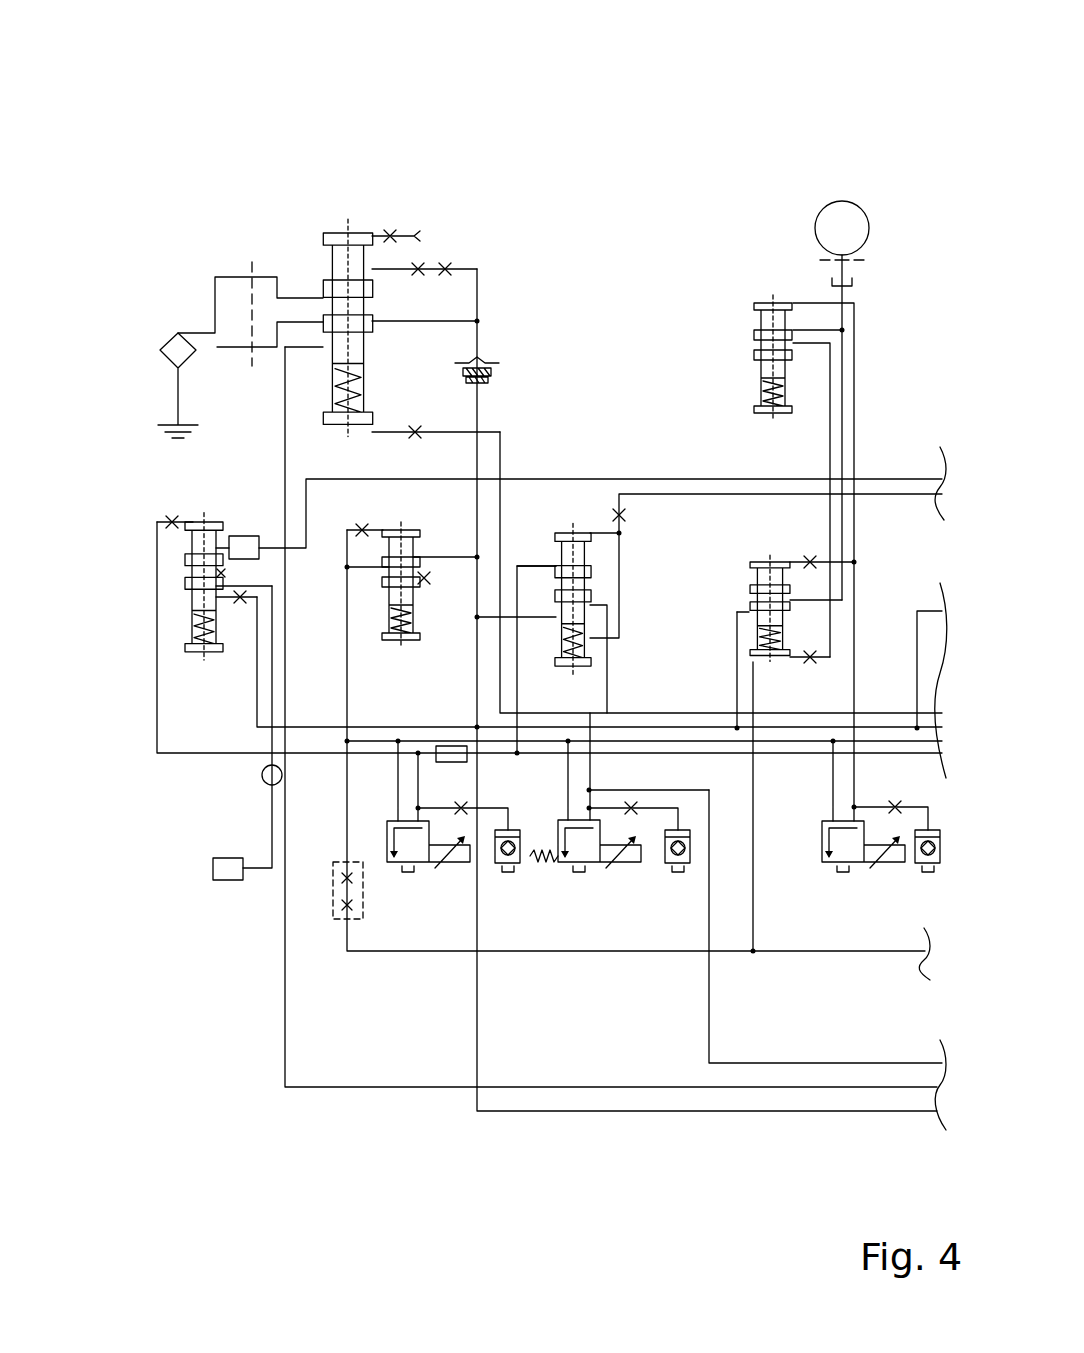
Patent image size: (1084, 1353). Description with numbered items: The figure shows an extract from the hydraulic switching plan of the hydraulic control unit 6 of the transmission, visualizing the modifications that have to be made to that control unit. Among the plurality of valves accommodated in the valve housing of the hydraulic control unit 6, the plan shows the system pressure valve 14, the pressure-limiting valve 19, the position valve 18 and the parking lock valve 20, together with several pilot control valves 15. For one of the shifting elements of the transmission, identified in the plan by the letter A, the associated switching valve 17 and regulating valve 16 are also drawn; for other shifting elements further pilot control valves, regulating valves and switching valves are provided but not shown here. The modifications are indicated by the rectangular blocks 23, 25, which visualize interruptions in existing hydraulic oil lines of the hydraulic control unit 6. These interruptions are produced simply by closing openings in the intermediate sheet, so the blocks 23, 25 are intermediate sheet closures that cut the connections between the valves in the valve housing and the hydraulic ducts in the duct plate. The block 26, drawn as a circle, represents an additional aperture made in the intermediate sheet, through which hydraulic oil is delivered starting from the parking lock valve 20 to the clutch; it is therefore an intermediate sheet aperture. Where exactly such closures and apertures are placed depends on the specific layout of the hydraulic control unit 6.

The hydraulic control unit 6 is at (250, 180).
The system pressure valve 14 is at (357, 224).
The pressure-limiting valve 19 is at (417, 508).
The position valve 18 is at (583, 508).
The regulating valve 16 is at (757, 543).
The switching valve 17 is at (771, 293).
The shifting element A is at (832, 200).
The parking lock valve 20 is at (192, 513).
The intermediate sheet closure 23 is at (244, 535).
The intermediate sheet aperture 26 is at (262, 775).
The intermediate sheet closure 25 is at (215, 880).
The pilot control valves 15 is at (421, 878).